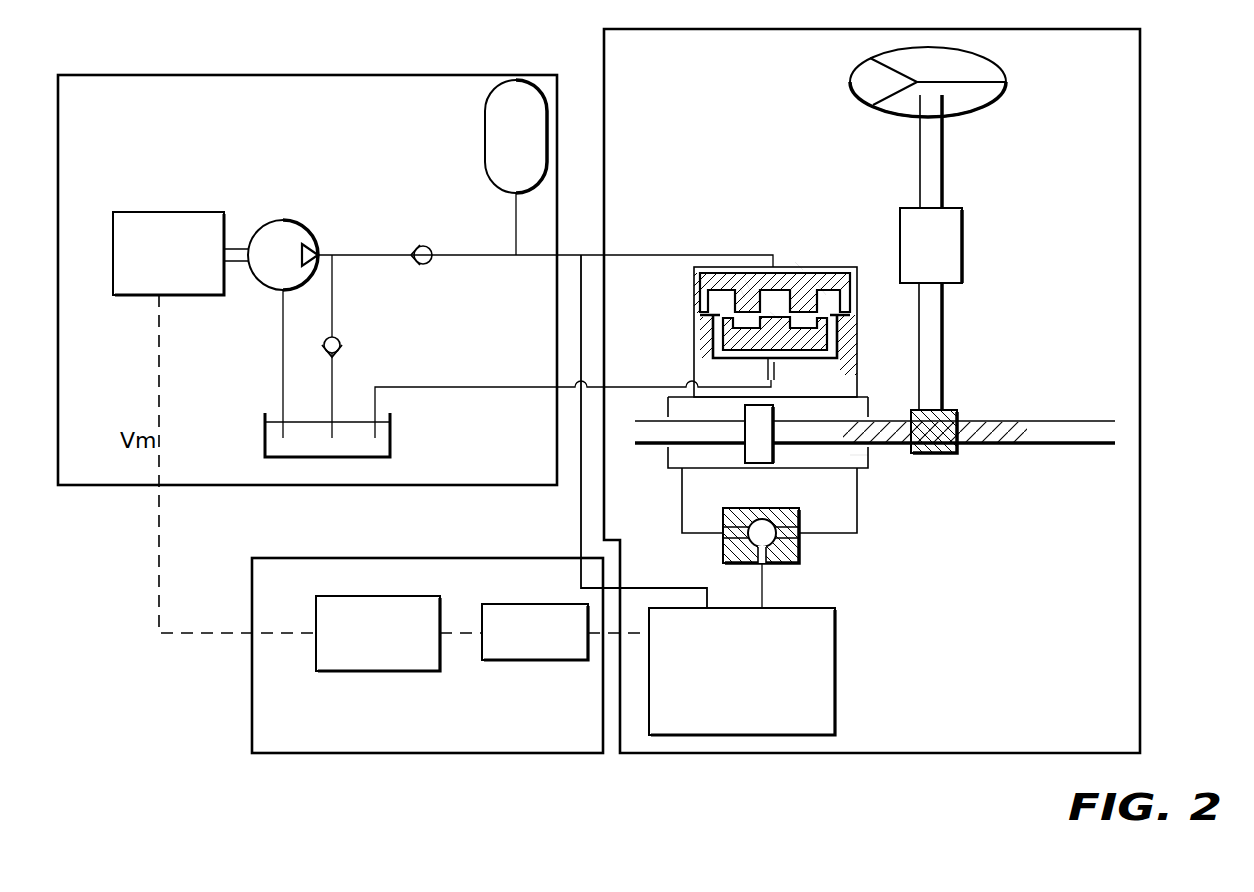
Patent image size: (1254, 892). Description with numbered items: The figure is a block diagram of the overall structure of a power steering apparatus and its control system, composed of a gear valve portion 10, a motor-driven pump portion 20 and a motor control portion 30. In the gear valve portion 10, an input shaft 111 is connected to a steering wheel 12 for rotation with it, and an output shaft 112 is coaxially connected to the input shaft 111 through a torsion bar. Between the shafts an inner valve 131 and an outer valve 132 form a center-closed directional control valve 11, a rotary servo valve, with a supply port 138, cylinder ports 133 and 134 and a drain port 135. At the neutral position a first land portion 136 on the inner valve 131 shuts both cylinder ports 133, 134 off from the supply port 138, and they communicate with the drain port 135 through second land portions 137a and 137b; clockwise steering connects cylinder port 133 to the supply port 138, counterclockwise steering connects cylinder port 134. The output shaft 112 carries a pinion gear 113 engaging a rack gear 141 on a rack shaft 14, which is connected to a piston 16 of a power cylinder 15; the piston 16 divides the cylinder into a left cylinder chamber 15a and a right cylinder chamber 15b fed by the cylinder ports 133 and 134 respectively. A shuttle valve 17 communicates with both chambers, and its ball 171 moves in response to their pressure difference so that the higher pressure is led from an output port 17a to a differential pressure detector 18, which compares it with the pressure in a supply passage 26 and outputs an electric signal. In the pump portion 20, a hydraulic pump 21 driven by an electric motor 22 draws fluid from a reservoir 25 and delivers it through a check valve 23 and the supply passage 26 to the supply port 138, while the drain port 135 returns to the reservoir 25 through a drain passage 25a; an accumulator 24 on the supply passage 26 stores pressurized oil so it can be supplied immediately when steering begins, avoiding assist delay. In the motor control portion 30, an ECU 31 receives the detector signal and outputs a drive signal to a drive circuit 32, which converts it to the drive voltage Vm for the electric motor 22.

The gear valve portion 10 is at (660, 29).
The directional control valve 11 is at (963, 243).
The steering wheel 12 is at (1006, 78).
The rack shaft 14 is at (1078, 421).
The power cylinder 15 is at (665, 455).
The left cylinder chamber 15a is at (684, 466).
The right cylinder chamber 15b is at (850, 455).
The piston 16 is at (765, 450).
The shuttle valve 17 is at (777, 542).
The output port 17a is at (780, 565).
The differential pressure detector 18 is at (838, 685).
The motor-driven pump portion 20 is at (122, 75).
The hydraulic pump 21 is at (303, 228).
The electric motor 22 is at (195, 212).
The check valve 23 is at (423, 246).
The accumulator 24 is at (485, 120).
The reservoir 25 is at (392, 436).
The drain passage 25a is at (480, 390).
The supply passage 26 is at (535, 257).
The motor control portion 30 is at (312, 558).
The ECU 31 is at (530, 662).
The drive circuit 32 is at (398, 672).
The input shaft 111 is at (943, 166).
The output shaft 112 is at (945, 356).
The pinion gear 113 is at (945, 455).
The inner valve 131 is at (735, 345).
The outer valve 132 is at (822, 292).
The cylinder port 133 is at (743, 290).
The cylinder port 134 is at (798, 266).
The drain port 135 is at (778, 366).
The first land portion 136 is at (777, 318).
The second land portion 137a is at (725, 341).
The second land portion 137b is at (850, 292).
The supply port 138 is at (747, 284).
The rack gear 141 is at (1000, 421).
The ball 171 is at (760, 527).